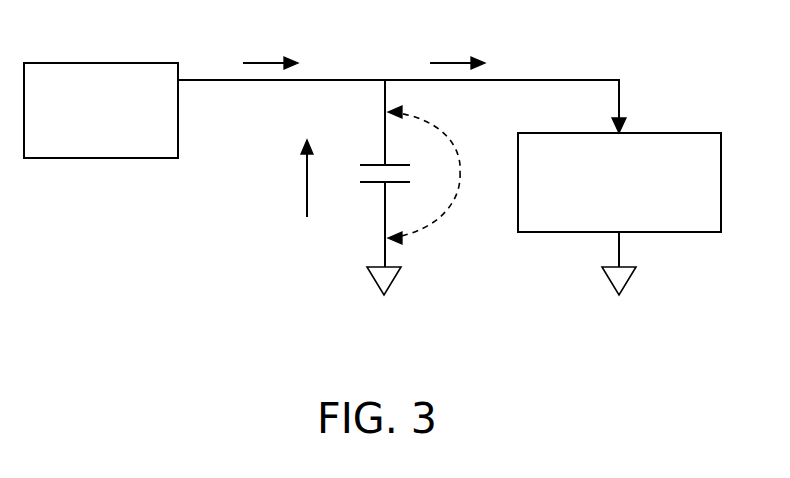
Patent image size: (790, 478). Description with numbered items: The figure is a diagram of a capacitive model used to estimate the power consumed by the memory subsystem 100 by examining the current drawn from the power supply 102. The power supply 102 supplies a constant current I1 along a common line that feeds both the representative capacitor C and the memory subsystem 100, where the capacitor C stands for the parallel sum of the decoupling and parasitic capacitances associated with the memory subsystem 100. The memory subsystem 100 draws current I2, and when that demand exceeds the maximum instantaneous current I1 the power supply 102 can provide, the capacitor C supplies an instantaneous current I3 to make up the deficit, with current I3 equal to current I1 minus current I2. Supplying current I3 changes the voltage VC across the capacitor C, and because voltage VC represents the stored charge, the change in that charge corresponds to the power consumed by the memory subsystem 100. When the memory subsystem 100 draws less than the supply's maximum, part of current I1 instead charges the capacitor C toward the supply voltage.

The memory subsystem 100 is at (681, 133).
The power supply 102 is at (101, 63).
The representative capacitor C is at (365, 187).
The power supply current I1 is at (270, 49).
The memory subsystem current I2 is at (457, 49).
The capacitor current I3 is at (293, 178).
The capacitor voltage VC is at (434, 175).